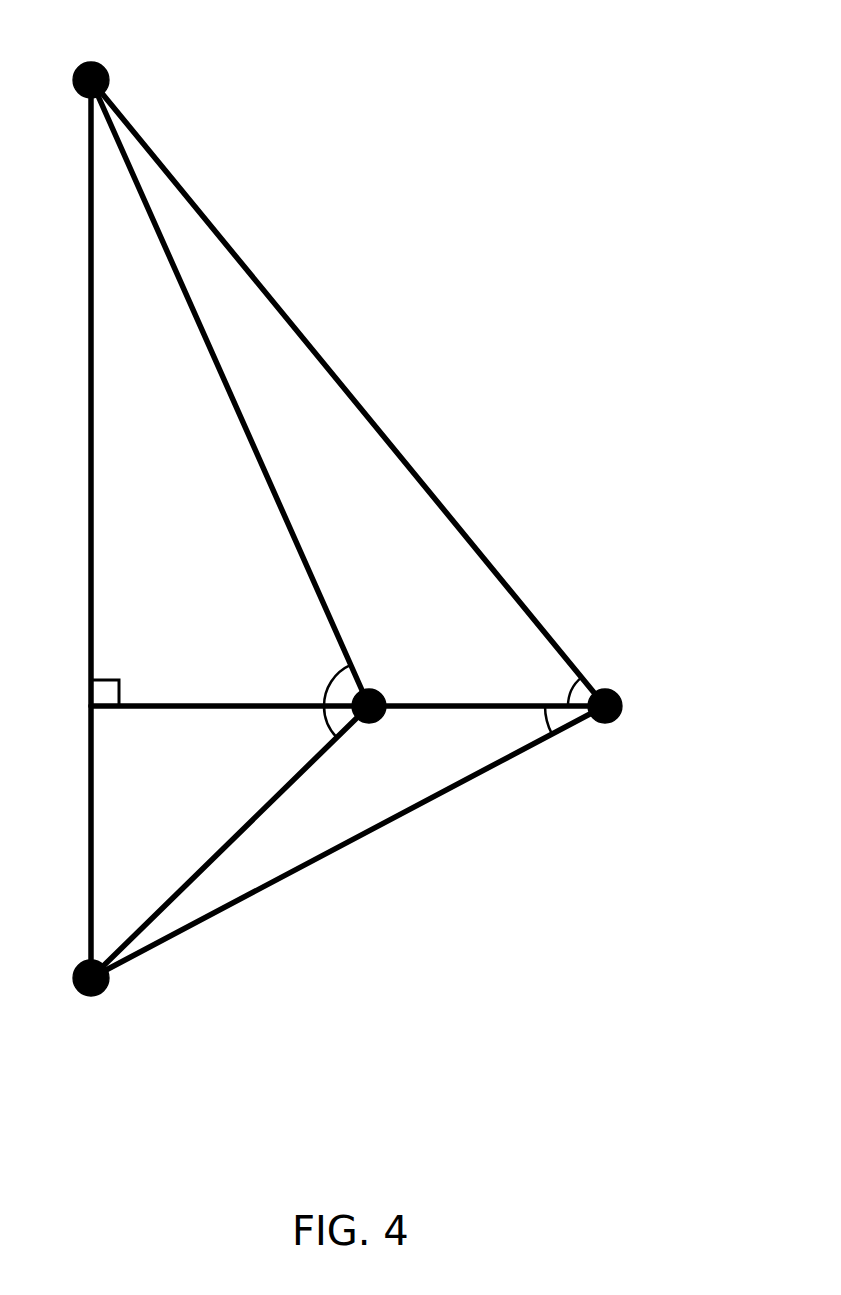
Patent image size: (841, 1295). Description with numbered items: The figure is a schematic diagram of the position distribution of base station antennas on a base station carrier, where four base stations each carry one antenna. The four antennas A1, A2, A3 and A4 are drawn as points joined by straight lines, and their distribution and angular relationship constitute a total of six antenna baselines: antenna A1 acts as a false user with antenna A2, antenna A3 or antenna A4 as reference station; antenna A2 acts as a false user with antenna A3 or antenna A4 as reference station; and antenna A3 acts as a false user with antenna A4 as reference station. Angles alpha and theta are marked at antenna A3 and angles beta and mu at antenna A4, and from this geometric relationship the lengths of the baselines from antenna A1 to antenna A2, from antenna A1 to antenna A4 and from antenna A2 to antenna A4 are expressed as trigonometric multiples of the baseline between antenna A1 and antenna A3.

The antenna A1 is at (94, 51).
The antenna A2 is at (94, 1012).
The antenna A3 is at (392, 686).
The antenna A4 is at (637, 696).